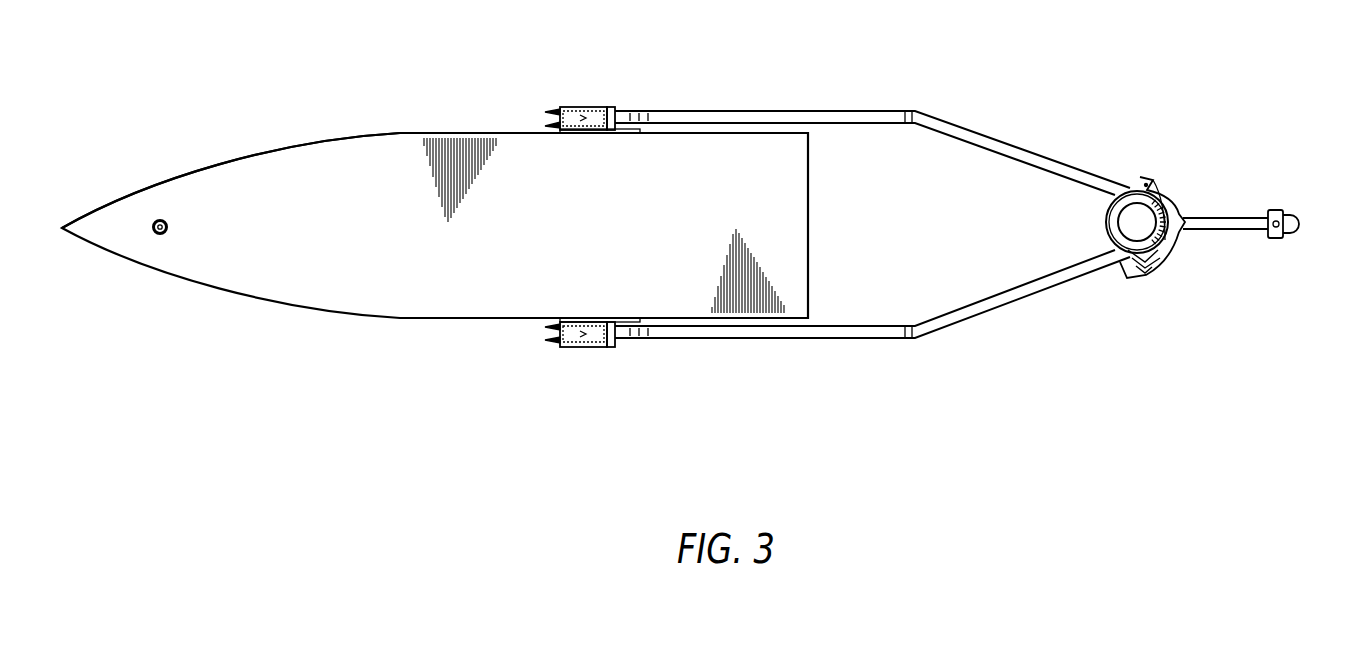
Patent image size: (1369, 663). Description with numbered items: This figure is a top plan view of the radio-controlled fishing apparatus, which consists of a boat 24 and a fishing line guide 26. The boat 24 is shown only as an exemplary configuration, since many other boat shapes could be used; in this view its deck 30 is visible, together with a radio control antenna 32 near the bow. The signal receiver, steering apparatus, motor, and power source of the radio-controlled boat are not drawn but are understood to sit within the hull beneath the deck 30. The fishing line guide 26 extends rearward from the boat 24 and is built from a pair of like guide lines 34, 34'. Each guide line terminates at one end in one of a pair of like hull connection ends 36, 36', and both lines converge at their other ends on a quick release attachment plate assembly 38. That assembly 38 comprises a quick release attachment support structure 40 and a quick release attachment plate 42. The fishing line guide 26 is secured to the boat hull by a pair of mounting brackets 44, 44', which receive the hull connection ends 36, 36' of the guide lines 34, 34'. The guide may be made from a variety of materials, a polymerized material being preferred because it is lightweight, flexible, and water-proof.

The boat 24 is at (296, 118).
The fishing line guide 26 is at (998, 112).
The deck 30 is at (366, 243).
The radio control antenna 32 is at (158, 218).
The guide line 34 is at (872, 345).
The guide line 34' is at (872, 104).
The hull connection end 36 is at (605, 384).
The hull connection end 36' is at (604, 67).
The quick release attachment plate assembly 38 is at (1165, 257).
The quick release attachment support structure 40 is at (1168, 192).
The quick release attachment plate 42 is at (1294, 212).
The mounting bracket 44 is at (566, 368).
The mounting bracket 44' is at (565, 84).